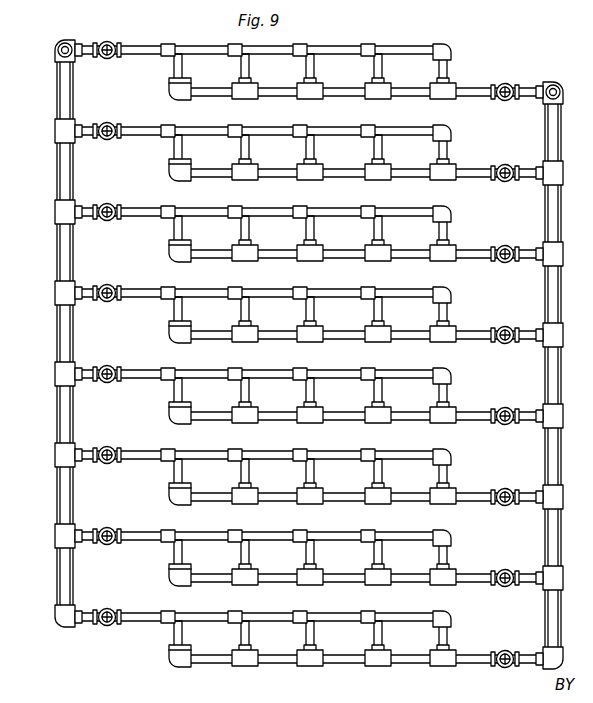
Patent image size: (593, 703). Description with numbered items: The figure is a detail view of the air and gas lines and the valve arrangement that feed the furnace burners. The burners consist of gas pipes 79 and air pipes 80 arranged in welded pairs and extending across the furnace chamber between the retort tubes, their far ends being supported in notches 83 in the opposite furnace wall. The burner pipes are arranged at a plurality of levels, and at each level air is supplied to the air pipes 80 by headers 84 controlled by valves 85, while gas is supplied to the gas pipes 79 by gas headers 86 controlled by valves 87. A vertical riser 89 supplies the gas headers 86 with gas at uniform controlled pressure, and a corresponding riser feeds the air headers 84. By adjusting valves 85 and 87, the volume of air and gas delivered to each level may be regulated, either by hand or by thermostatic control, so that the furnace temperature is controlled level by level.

The gas pipes 79 is at (166, 624).
The air pipes 80 is at (182, 612).
The notches 83 is at (561, 137).
The headers 84 is at (470, 88).
The valves 85 is at (509, 84).
The gas headers 86 is at (134, 46).
The valves 87 is at (107, 41).
The riser 89 is at (57, 100).